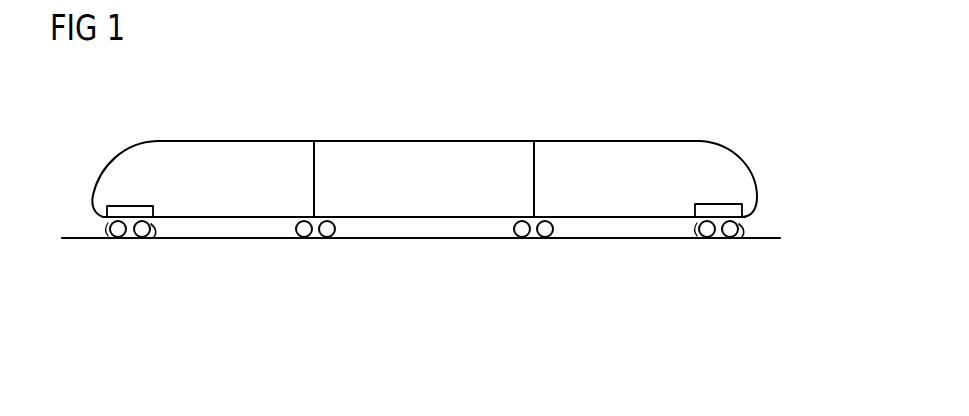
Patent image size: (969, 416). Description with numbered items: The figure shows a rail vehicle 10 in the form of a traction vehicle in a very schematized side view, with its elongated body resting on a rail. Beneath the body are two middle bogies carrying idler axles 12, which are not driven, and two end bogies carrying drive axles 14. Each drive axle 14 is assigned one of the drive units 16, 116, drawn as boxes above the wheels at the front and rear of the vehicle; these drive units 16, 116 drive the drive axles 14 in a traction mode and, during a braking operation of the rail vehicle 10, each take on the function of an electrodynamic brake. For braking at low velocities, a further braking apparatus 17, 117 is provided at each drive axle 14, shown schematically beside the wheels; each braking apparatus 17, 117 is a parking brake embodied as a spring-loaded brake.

The rail vehicle 10 is at (773, 122).
The idler axles 12 is at (327, 238).
The drive axles 14 is at (141, 238).
The drive unit 16 is at (128, 212).
The drive unit 116 is at (715, 208).
The braking apparatus 17 is at (158, 232).
The braking apparatus 117 is at (746, 232).